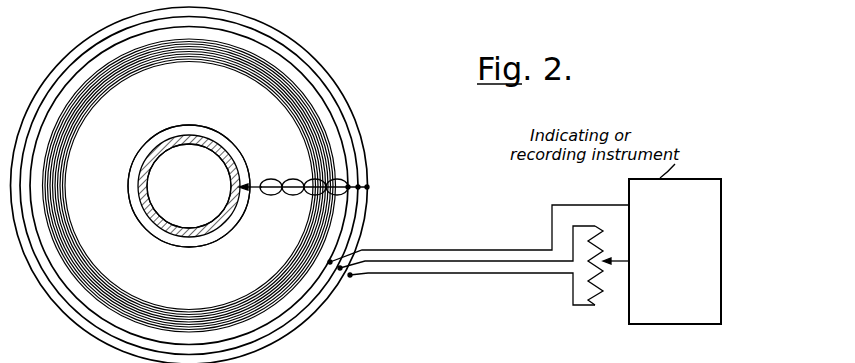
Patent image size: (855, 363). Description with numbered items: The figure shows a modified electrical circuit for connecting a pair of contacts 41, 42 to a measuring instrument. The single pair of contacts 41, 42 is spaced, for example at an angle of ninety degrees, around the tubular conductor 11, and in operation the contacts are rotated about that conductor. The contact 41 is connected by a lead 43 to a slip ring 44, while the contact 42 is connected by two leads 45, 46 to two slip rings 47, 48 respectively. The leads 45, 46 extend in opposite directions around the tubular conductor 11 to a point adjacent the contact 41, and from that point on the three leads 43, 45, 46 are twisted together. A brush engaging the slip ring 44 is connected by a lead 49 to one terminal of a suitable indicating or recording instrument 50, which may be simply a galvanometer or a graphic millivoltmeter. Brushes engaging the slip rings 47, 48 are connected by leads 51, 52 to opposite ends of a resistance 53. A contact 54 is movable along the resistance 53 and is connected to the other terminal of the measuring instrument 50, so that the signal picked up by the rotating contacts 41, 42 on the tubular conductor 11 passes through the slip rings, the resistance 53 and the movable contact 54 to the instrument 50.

The tubular conductor 11 is at (165, 227).
The contact 41 is at (253, 194).
The contact 42 is at (189, 135).
The lead 43 is at (297, 193).
The slip ring 44 is at (293, 53).
The lead 45 is at (237, 147).
The lead 46 is at (192, 247).
The slip ring 47 is at (265, 47).
The slip ring 48 is at (330, 78).
The lead 49 is at (395, 260).
The indicating or recording instrument 50 is at (721, 256).
The lead 51 is at (472, 251).
The lead 52 is at (442, 274).
The resistance 53 is at (598, 305).
The contact 54 is at (617, 265).